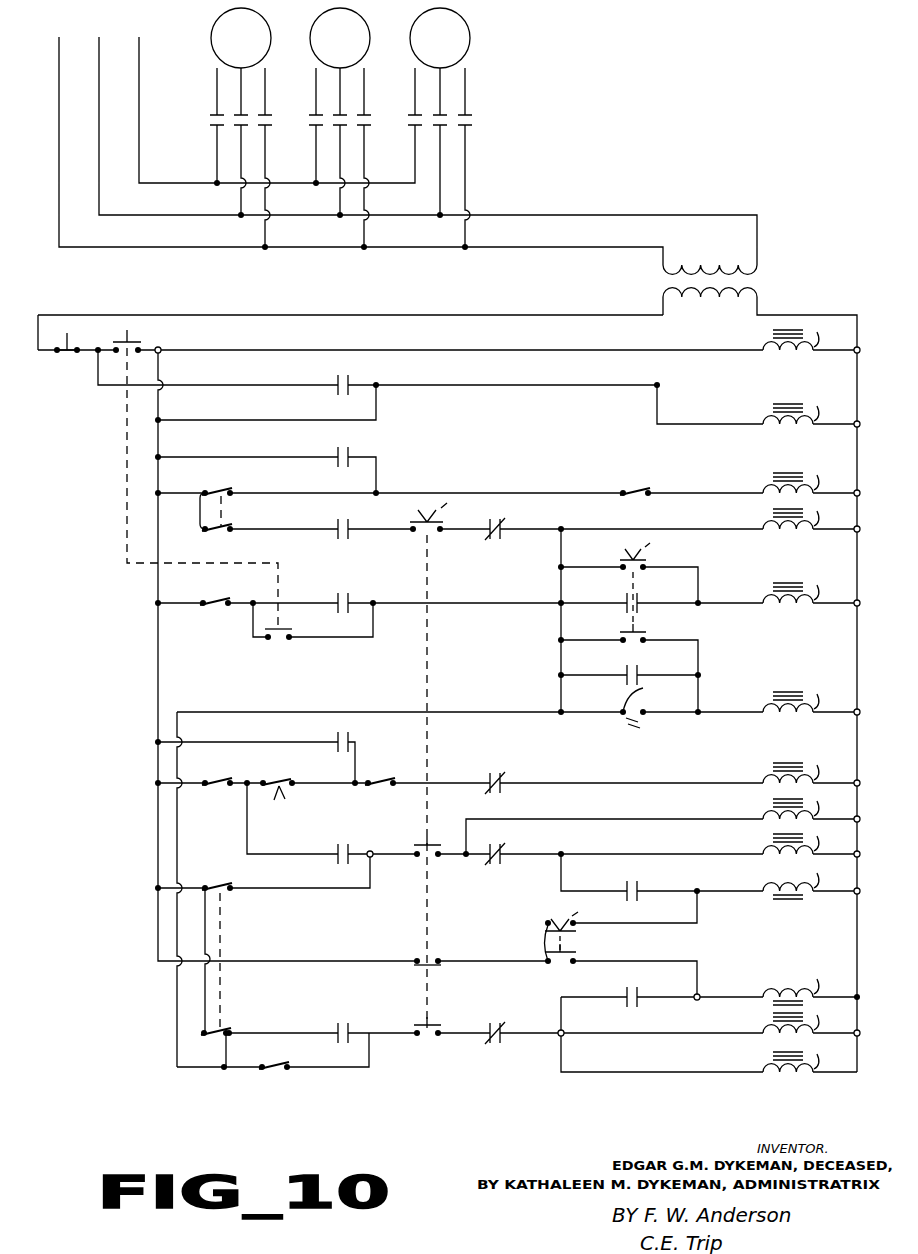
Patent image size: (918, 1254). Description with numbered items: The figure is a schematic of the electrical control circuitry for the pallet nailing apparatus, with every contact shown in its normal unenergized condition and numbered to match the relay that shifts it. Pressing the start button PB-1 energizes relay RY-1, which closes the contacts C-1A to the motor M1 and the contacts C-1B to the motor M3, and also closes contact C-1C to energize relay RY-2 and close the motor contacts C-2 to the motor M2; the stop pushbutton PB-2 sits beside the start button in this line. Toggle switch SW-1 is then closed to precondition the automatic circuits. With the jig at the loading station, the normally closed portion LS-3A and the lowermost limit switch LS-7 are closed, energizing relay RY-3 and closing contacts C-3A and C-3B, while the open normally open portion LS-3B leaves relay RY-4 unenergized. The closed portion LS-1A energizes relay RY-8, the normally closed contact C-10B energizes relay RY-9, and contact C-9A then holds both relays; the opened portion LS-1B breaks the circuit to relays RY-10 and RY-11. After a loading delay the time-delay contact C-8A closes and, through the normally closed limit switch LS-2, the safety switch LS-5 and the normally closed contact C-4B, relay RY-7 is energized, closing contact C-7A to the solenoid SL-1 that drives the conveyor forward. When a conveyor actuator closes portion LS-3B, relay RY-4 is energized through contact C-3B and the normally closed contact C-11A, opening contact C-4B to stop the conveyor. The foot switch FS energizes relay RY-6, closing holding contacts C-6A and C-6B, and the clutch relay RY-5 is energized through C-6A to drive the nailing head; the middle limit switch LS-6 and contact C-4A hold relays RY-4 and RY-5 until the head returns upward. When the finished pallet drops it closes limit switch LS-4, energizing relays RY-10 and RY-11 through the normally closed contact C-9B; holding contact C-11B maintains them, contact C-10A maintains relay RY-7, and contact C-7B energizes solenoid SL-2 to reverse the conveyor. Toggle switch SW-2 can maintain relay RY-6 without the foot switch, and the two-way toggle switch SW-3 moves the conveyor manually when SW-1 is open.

The motor M1 is at (255, 48).
The motor M2 is at (355, 48).
The motor M3 is at (455, 48).
The set of contacts C-1A is at (212, 115).
The set of motor contacts C-2 is at (312, 115).
The set of contacts C-1B is at (467, 115).
The start button PB-1 is at (181, 340).
The stop pushbutton PB-2 is at (69, 360).
The contact C-1C is at (361, 371).
The contact C-3A is at (361, 443).
The contact C-3B is at (337, 535).
The normally closed contact C-11A is at (500, 526).
The contact C-4A is at (337, 596).
The holding contact C-6A is at (652, 590).
The holding contact C-6B is at (652, 662).
The contact C-10A is at (361, 728).
The normally closed contact C-4B is at (500, 780).
The time-delay contact C-8A is at (285, 795).
The contact C-9A is at (337, 850).
The normally closed contact C-10B is at (500, 851).
The normally open contact C-7A is at (652, 878).
The contact C-7B is at (627, 992).
The holding contact C-11B is at (361, 1016).
The normally closed contact C-9B is at (514, 1014).
The normally closed portion of conveyor switch LS-3A is at (212, 490).
The normally open portion of conveyor switch LS-3B is at (220, 527).
The lowermost limit switch LS-7 is at (640, 480).
The middle limit switch LS-6 is at (213, 606).
The normally closed limit switch LS-2 is at (216, 780).
The safety switch LS-5 is at (391, 770).
The normally open portion of limit switch LS-1A is at (224, 873).
The normally closed portion of limit switch LS-1B is at (218, 1030).
The normally open limit switch LS-4 is at (272, 1071).
The foot switch FS is at (643, 690).
The toggle switch SW-1 is at (416, 522).
The toggle switch SW-2 is at (650, 553).
The two-way toggle switch SW-3 is at (578, 919).
The relay RY-1 is at (791, 358).
The relay RY-2 is at (791, 428).
The relay RY-3 is at (791, 475).
The relay RY-4 is at (791, 535).
The clutch relay RY-5 is at (791, 584).
The relay RY-6 is at (789, 690).
The relay RY-7 is at (787, 762).
The relay RY-8 is at (789, 801).
The relay RY-9 is at (789, 837).
The relay RY-10 is at (788, 1016).
The relay RY-11 is at (788, 1055).
The solenoid SL-1 is at (789, 880).
The solenoid SL-2 is at (789, 985).